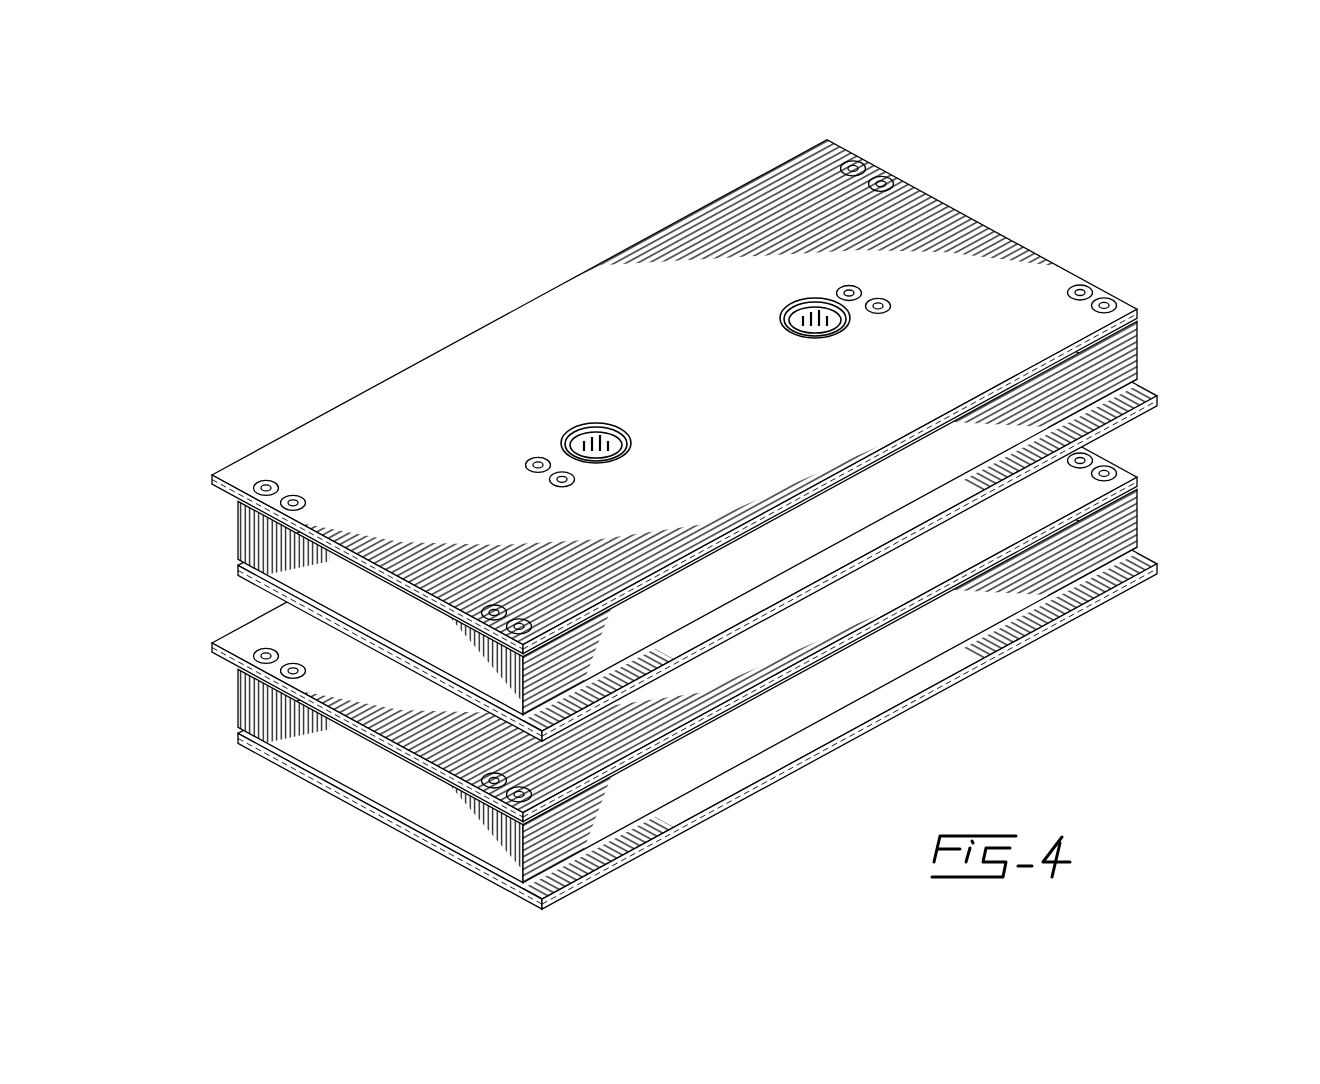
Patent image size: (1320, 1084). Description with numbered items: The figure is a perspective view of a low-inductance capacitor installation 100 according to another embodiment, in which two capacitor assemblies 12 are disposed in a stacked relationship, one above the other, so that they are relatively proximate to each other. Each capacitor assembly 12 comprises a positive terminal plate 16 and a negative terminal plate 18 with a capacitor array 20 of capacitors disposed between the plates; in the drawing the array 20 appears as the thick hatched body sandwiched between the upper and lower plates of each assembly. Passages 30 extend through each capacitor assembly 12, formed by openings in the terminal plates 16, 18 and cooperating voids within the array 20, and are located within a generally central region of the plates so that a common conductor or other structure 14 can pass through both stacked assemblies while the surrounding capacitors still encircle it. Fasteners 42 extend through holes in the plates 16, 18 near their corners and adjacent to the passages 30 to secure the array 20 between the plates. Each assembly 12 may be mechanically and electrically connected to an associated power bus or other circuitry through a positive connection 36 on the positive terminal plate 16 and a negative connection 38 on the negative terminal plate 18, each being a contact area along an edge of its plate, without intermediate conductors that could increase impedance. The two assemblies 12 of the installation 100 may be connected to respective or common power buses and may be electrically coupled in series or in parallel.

The low-inductance capacitor installation 100 is at (699, 514).
The capacitor assembly 12 is at (699, 507).
The conductor or other structure 14 is at (807, 305).
The positive terminal plate 16 is at (245, 580).
The negative terminal plate 18 is at (214, 478).
The capacitor array 20 is at (255, 540).
The passage 30 is at (632, 443).
The positive connection 36 is at (863, 547).
The negative connection 38 is at (520, 338).
The fasteners 42 is at (843, 168).